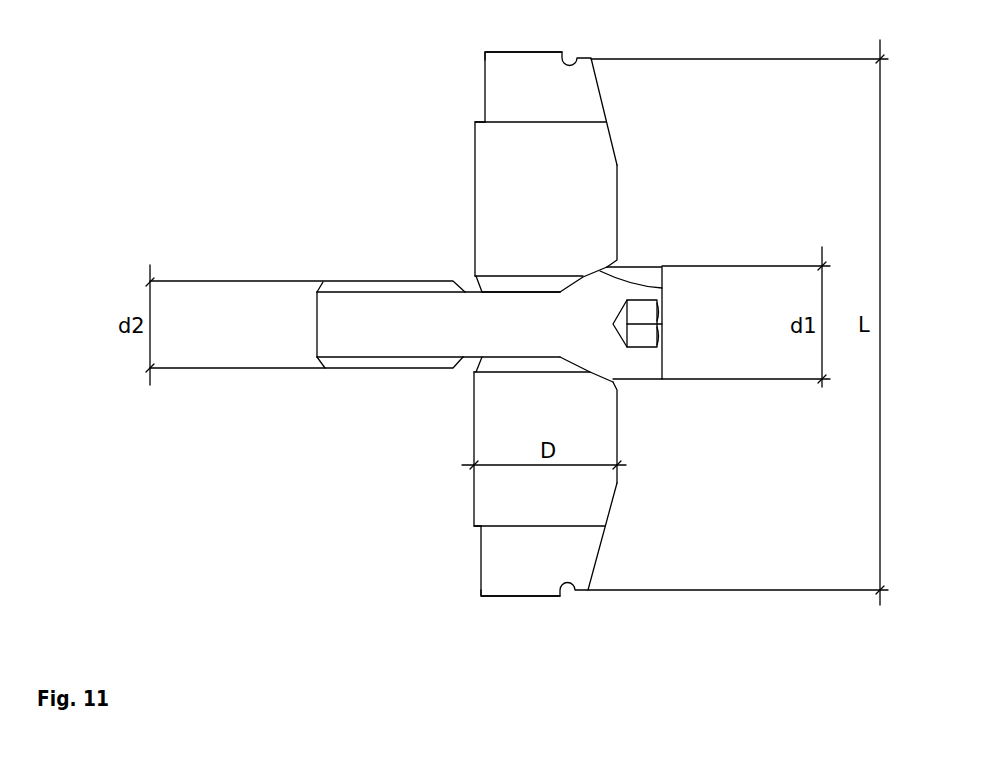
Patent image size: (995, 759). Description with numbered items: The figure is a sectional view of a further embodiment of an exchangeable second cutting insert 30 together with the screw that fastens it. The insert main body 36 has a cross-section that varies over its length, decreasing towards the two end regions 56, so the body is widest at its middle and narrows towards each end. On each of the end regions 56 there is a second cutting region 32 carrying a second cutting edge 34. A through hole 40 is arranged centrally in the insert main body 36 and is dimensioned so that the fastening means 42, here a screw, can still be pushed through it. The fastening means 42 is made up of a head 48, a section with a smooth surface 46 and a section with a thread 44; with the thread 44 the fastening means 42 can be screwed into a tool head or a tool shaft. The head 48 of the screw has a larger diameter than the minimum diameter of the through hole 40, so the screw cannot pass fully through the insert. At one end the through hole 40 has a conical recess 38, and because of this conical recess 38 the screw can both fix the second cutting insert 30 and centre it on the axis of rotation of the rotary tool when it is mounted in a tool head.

The second cutting insert 30 is at (466, 250).
The second cutting region 32 is at (527, 53).
The second cutting edge 34 is at (525, 597).
The insert main body 36 is at (600, 235).
The conical recess 38 is at (662, 288).
The through hole 40 is at (507, 290).
The fastening means 42 is at (322, 340).
The thread 44 is at (352, 362).
The smooth surface 46 is at (515, 360).
The head 48 is at (633, 371).
The end region 56 is at (458, 115).